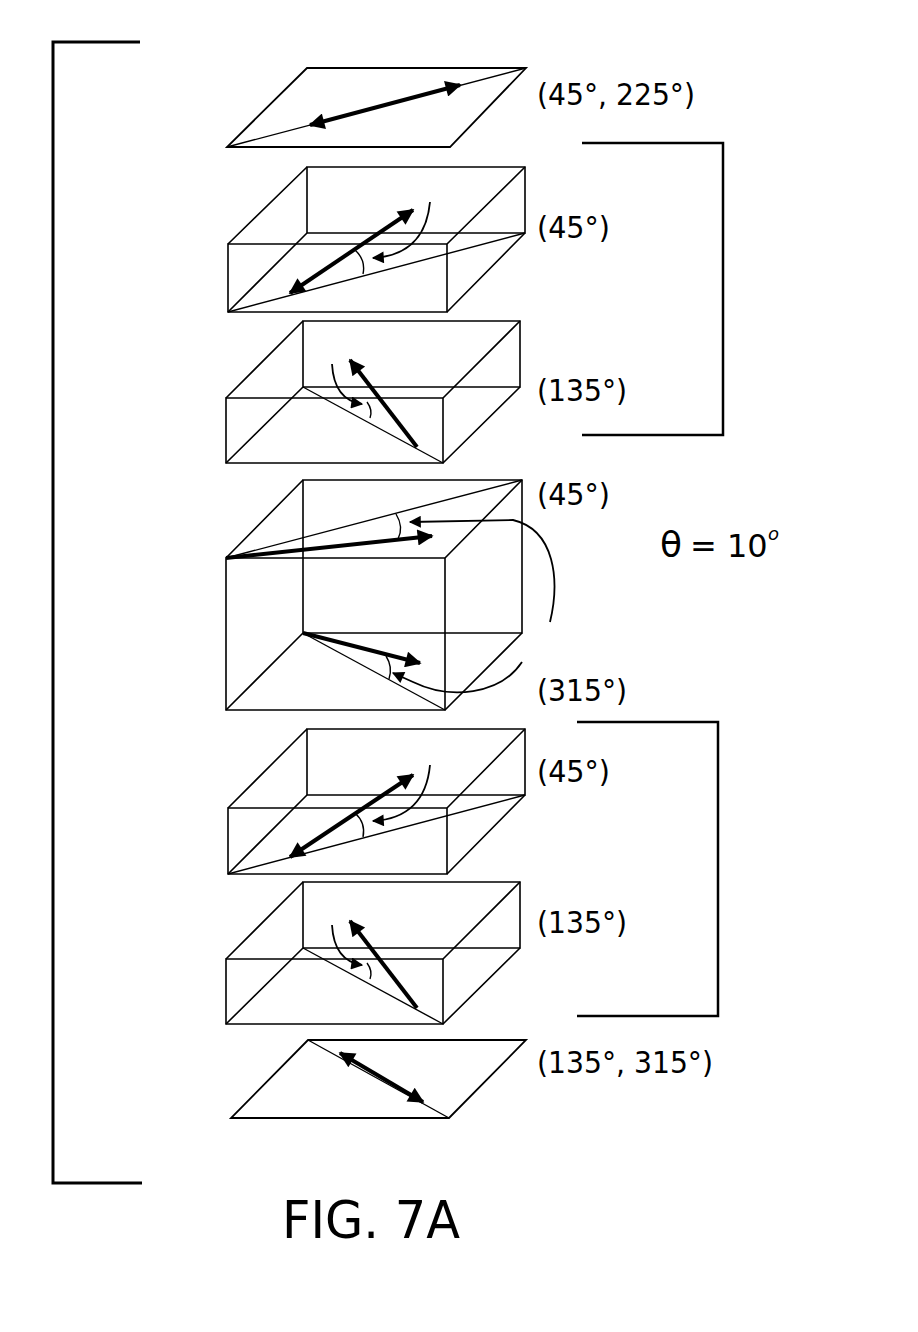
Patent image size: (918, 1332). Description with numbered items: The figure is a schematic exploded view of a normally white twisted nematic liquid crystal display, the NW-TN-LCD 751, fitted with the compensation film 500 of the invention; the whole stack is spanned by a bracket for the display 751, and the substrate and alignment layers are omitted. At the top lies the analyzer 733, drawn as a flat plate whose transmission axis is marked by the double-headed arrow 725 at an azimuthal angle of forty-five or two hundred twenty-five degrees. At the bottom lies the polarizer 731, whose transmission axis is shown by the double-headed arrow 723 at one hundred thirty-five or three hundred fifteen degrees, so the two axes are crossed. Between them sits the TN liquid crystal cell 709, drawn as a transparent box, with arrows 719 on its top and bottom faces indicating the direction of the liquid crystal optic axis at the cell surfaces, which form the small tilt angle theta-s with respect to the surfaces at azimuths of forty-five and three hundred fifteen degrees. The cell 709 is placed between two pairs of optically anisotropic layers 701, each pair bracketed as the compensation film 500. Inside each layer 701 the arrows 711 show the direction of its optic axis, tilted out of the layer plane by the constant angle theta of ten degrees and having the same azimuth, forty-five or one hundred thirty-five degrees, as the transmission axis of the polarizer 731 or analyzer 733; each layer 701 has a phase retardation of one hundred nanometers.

The compensation film 500 is at (725, 349).
The optically anisotropic layer 701 is at (228, 268).
The TN liquid crystal cell 709 is at (226, 642).
The arrows indicating optic axis direction of optically anisotropic layers 711 is at (385, 233).
The arrows indicating liquid crystal optic axis direction 719 is at (330, 546).
The double-headed arrow for polarizer transmission axis 723 is at (372, 1077).
The double-headed arrow for analyzer transmission axis 725 is at (370, 108).
The polarizer 731 is at (493, 1040).
The analyzer 733 is at (463, 68).
The NW-TN-LCD 751 is at (79, 612).